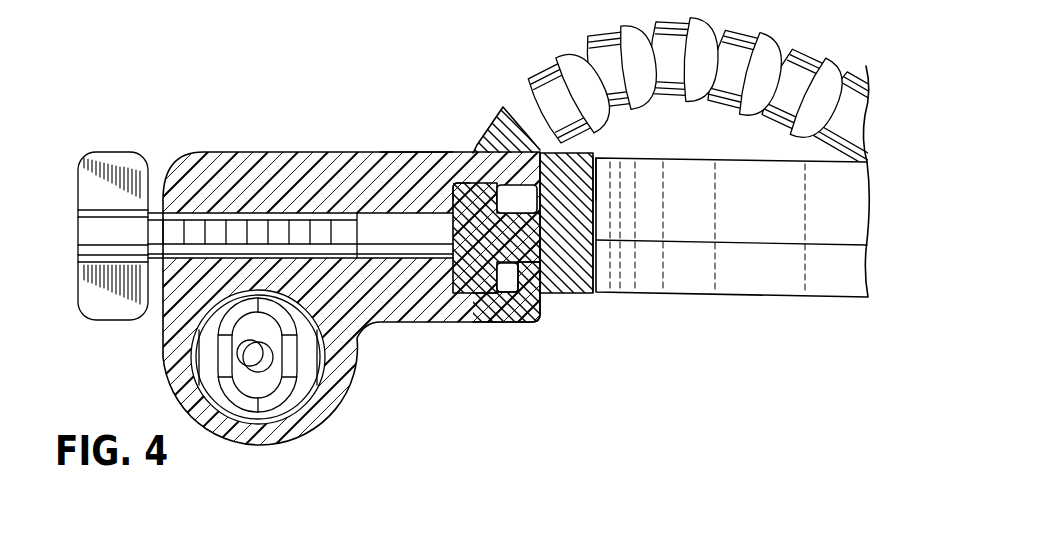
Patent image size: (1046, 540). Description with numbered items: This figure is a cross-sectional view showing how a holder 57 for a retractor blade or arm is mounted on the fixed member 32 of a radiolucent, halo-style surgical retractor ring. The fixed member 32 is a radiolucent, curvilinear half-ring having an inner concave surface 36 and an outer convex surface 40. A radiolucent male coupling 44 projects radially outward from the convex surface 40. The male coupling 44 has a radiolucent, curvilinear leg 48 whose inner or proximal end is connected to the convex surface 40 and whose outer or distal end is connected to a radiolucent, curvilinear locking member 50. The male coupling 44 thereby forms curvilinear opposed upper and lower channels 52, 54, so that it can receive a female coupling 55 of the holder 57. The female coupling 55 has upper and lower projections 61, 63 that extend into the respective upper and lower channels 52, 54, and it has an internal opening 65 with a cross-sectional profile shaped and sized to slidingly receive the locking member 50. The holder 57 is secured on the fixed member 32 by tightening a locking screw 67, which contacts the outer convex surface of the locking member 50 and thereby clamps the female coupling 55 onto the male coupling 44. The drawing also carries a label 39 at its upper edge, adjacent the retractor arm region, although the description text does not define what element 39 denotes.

The fixed member 32 is at (738, 296).
The inner concave surface 36 is at (772, 215).
The flexible articulating section 39 is at (700, 19).
The outer convex surface 40 is at (593, 158).
The male coupling 44 is at (478, 296).
The leg 48 is at (586, 282).
The locking member 50 is at (403, 322).
The upper channel 52 is at (500, 160).
The lower channel 54 is at (520, 296).
The female coupling 55 is at (413, 190).
The holder 57 is at (190, 153).
The upper projection 61 is at (528, 186).
The lower projection 63 is at (527, 296).
The internal opening 65 is at (470, 160).
The locking screw 67 is at (363, 230).